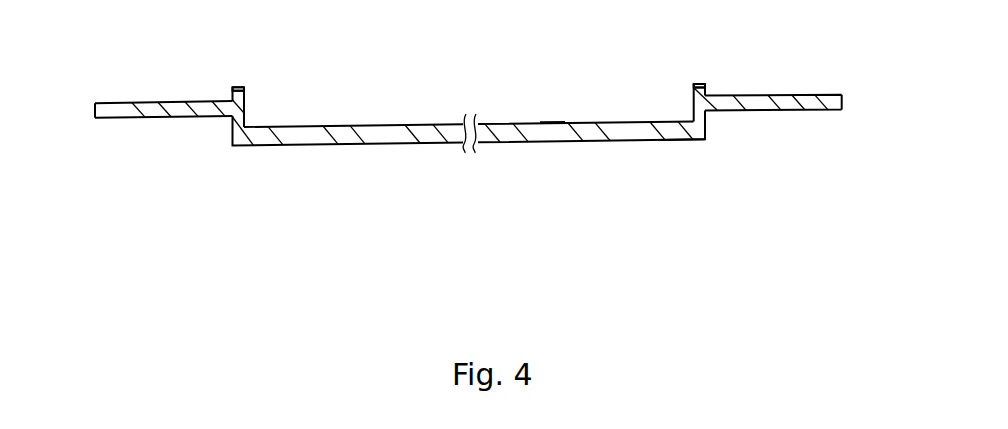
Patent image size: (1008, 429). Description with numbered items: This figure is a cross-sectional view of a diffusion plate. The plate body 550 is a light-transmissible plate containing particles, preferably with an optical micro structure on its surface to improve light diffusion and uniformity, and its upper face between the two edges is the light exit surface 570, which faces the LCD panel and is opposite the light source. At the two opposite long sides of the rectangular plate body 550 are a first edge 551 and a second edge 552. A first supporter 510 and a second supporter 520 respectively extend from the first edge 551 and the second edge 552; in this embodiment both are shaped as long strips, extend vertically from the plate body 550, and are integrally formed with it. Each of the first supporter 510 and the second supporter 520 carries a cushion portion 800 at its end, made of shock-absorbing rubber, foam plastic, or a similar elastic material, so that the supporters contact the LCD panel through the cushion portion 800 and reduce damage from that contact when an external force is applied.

The first supporter 510 is at (238, 110).
The second supporter 520 is at (697, 106).
The plate body 550 is at (378, 135).
The first edge 551 is at (237, 134).
The second edge 552 is at (700, 128).
The light exit surface 570 is at (558, 105).
The cushion portion 800 is at (238, 87).